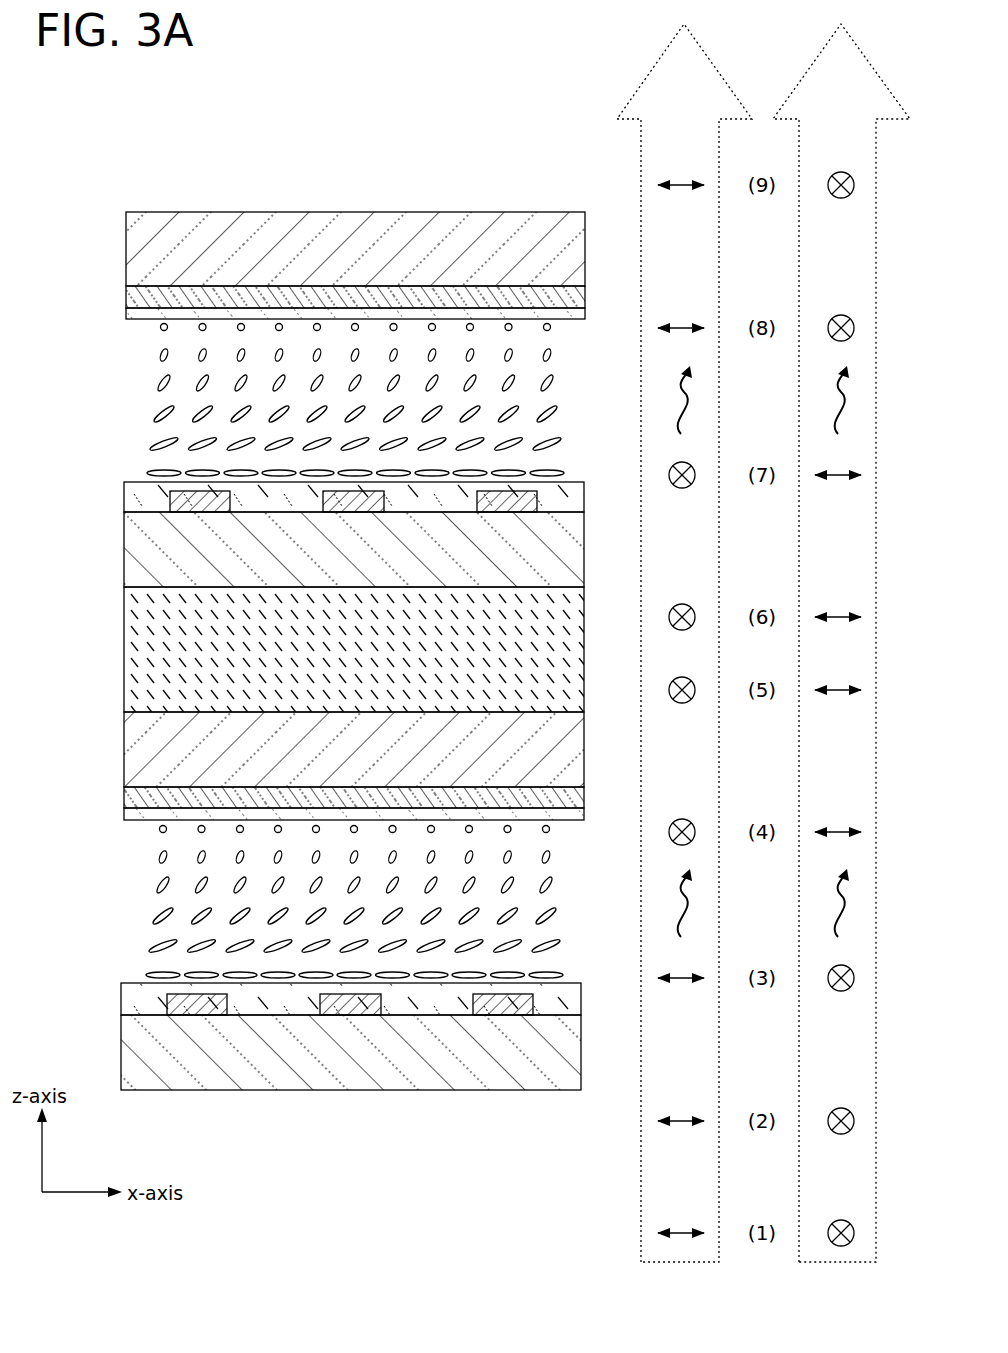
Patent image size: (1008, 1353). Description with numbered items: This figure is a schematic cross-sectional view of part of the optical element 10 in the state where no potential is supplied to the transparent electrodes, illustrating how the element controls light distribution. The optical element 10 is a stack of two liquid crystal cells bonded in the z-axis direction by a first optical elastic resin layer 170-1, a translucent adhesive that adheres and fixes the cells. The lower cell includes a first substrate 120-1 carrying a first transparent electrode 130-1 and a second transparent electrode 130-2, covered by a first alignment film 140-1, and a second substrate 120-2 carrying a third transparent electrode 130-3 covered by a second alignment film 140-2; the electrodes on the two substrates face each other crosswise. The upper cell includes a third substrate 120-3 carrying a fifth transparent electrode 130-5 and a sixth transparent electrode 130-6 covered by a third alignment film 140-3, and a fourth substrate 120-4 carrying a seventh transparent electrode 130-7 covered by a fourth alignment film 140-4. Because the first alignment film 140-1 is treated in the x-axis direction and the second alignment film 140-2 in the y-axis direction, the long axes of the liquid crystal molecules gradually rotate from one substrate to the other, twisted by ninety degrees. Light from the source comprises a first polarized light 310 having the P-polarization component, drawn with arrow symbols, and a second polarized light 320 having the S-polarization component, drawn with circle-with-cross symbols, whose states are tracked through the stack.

The optical element 10 is at (69, 164).
The first substrate 120-1 is at (308, 1055).
The second substrate 120-2 is at (309, 748).
The third substrate 120-3 is at (309, 553).
The fourth substrate 120-4 is at (310, 247).
The first transparent electrode 130-1 is at (203, 1008).
The second transparent electrode 130-2 is at (358, 1008).
The third transparent electrode 130-3 is at (348, 802).
The fifth transparent electrode 130-5 is at (200, 505).
The sixth transparent electrode 130-6 is at (355, 505).
The seventh transparent electrode 130-7 is at (347, 292).
The first alignment film 140-1 is at (432, 1006).
The second alignment film 140-2 is at (428, 816).
The third alignment film 140-3 is at (428, 505).
The fourth alignment film 140-4 is at (432, 316).
The first optical elastic resin layer 170-1 is at (134, 650).
The first polarized light 310 is at (678, 1263).
The second polarized light 320 is at (835, 1263).